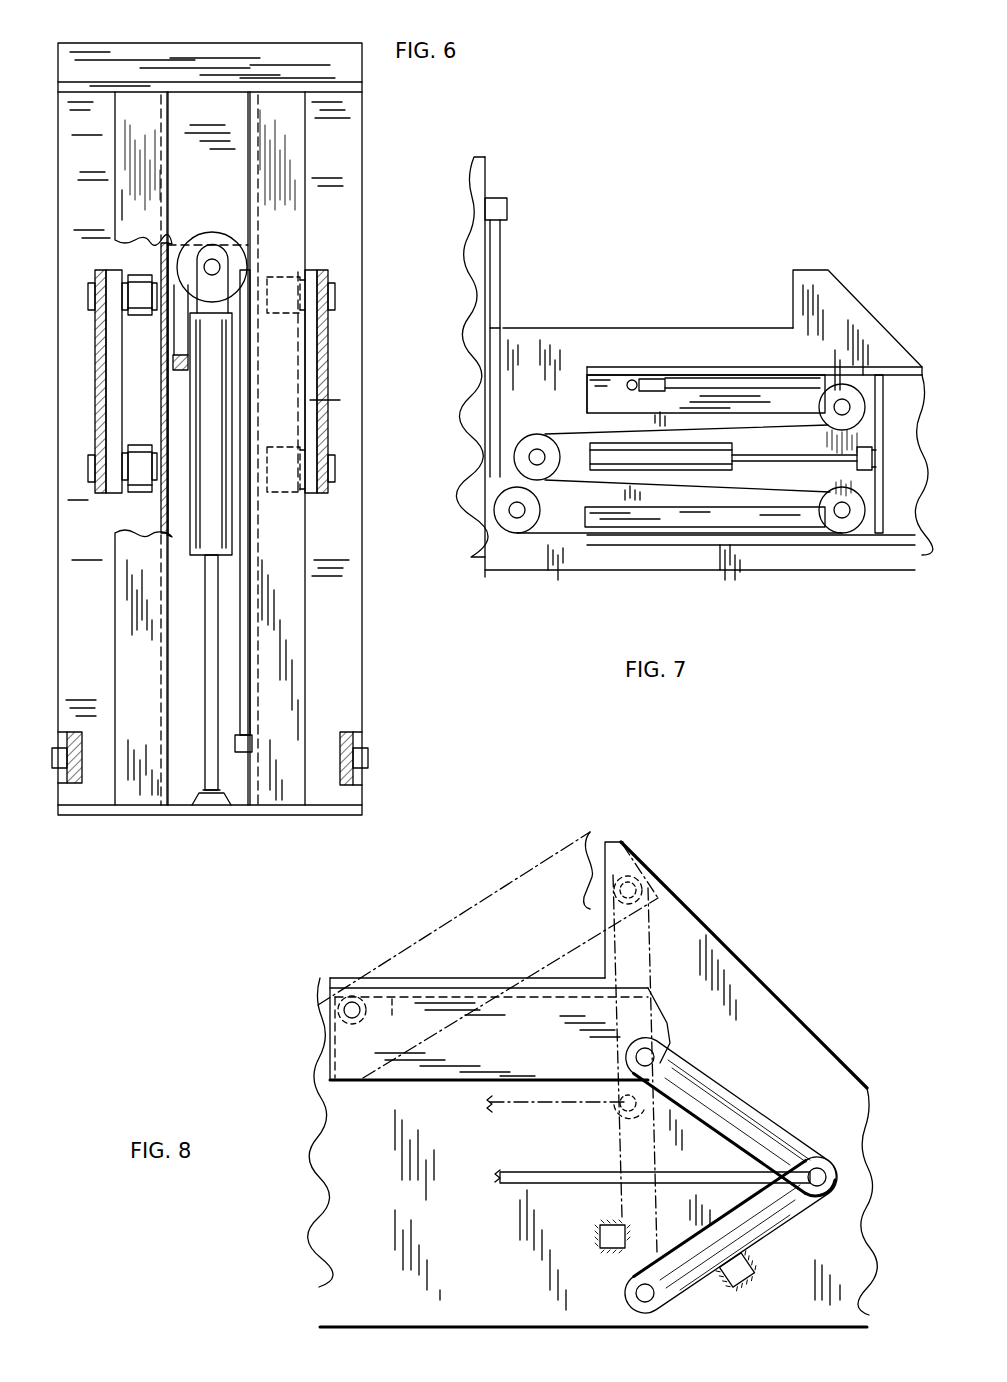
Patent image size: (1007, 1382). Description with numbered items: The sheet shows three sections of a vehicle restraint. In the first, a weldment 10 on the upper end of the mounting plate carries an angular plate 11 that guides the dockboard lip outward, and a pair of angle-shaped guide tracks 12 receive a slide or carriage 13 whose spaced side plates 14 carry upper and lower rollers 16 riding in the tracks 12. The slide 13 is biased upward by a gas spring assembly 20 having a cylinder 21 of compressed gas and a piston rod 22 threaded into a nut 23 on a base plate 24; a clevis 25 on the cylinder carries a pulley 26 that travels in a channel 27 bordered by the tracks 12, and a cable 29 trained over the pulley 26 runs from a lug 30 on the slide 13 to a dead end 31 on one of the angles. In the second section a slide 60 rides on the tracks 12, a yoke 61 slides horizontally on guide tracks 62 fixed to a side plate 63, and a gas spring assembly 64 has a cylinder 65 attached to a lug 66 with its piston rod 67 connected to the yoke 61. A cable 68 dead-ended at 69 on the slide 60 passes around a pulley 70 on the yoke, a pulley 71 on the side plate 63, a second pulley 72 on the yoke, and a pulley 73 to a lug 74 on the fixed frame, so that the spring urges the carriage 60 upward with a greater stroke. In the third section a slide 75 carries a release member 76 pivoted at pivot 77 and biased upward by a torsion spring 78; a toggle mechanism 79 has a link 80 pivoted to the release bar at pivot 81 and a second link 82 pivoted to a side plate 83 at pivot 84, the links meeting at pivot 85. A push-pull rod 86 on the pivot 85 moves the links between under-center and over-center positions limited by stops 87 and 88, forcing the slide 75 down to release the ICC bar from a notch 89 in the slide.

In FIG. 6, the weldment 10 is at (57, 52).
In FIG. 6, the angular plate 11 is at (107, 62).
In FIG. 6, the guide tracks 12 is at (120, 148).
In FIG. 7, the guide tracks 12 is at (472, 185).
In FIG. 6, the slide or carriage 13 is at (108, 360).
In FIG. 6, the side plates 14 is at (110, 318).
In FIG. 6, the rollers 16 is at (135, 275).
In FIG. 6, the gas spring assembly 20 is at (185, 538).
In FIG. 6, the cylinder 21 is at (210, 515).
In FIG. 6, the piston rod 22 is at (208, 705).
In FIG. 6, the nut 23 is at (205, 805).
In FIG. 6, the base plate 24 is at (278, 808).
In FIG. 6, the clevis 25 is at (214, 262).
In FIG. 6, the pulley 26 is at (212, 232).
In FIG. 6, the track or channel 27 is at (222, 105).
In FIG. 6, the cable 29 is at (245, 652).
In FIG. 6, the lug 30 is at (172, 368).
In FIG. 6, the dead end 31 is at (248, 742).
In FIG. 7, the slide 60 is at (832, 282).
In FIG. 7, the yoke 61 is at (879, 378).
In FIG. 7, the guide tracks 62 is at (770, 365).
In FIG. 7, the side plate 63 is at (666, 338).
In FIG. 7, the gas spring assembly 64 is at (585, 428).
In FIG. 7, the cylinder 65 is at (615, 460).
In FIG. 7, the lug 66 is at (718, 454).
In FIG. 7, the piston rod 67 is at (825, 462).
In FIG. 7, the cable 68 is at (700, 380).
In FIG. 7, the dead end 69 is at (645, 378).
In FIG. 7, the pulley 70 is at (825, 395).
In FIG. 7, the pulley 71 is at (522, 432).
In FIG. 7, the second pulley 72 is at (852, 525).
In FIG. 7, the pulley 73 is at (500, 512).
In FIG. 7, the lug 74 is at (510, 208).
In FIG. 8, the slide or carriage 75 is at (758, 963).
In FIG. 8, the release member 76 is at (405, 1092).
In FIG. 8, the pivot 77 is at (340, 1012).
In FIG. 8, the torsion spring 78 is at (394, 1010).
In FIG. 8, the toggle mechanism 79 is at (785, 1128).
In FIG. 8, the link 80 is at (740, 1112).
In FIG. 8, the pivot 81 is at (655, 1055).
In FIG. 8, the second link 82 is at (780, 1215).
In FIG. 8, the side plate 83 is at (568, 1312).
In FIG. 8, the pivot 84 is at (634, 1290).
In FIG. 8, the pivot 85 is at (828, 1176).
In FIG. 8, the push-pull rod 86 is at (556, 1170).
In FIG. 8, the stop 87 is at (752, 1278).
In FIG. 8, the stop 88 is at (605, 1222).
In FIG. 8, the notch 89 is at (590, 832).